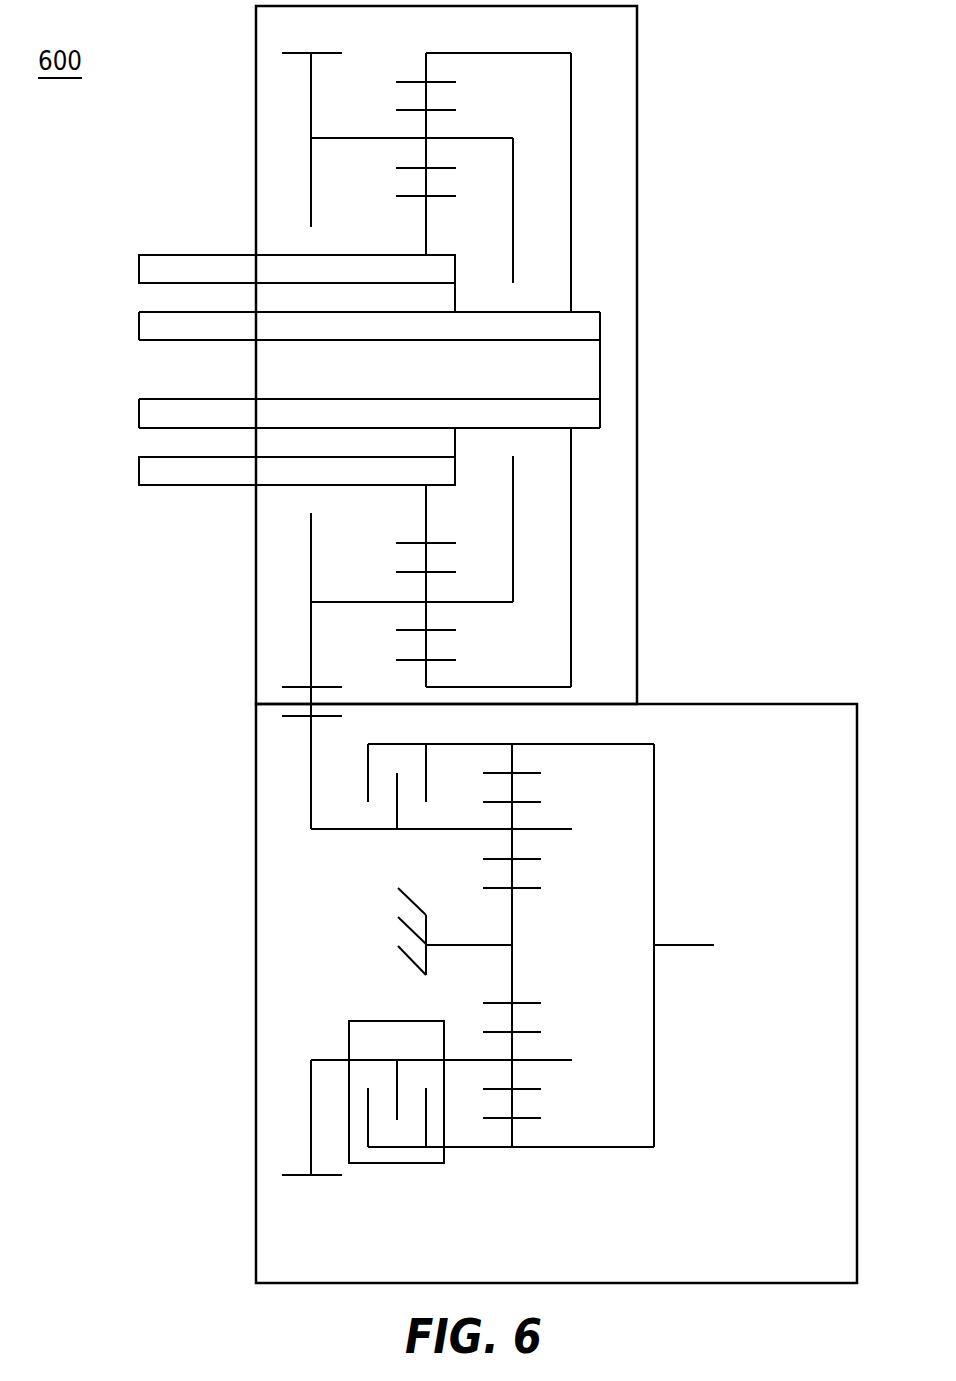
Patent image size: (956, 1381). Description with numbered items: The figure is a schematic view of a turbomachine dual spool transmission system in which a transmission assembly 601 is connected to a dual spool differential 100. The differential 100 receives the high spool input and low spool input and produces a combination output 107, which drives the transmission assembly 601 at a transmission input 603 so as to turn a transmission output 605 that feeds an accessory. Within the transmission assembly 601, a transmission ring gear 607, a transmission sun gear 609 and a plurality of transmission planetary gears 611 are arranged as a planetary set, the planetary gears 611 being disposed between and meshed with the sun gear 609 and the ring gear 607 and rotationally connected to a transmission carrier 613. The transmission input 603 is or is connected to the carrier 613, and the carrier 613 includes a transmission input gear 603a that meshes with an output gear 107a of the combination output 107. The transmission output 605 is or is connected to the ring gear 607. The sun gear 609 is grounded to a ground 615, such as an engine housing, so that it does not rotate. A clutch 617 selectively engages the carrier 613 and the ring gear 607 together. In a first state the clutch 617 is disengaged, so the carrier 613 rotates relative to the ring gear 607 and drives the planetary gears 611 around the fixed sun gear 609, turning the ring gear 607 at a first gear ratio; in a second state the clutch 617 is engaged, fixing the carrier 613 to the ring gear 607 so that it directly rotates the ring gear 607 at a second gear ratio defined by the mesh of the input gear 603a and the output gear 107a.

The dual spool differential 100 is at (256, 565).
The combination output 107 is at (311, 634).
The output gear 107a is at (298, 686).
The transmission input gear 603a is at (300, 716).
The transmission input 603 is at (463, 970).
The transmission carrier 613 is at (311, 819).
The ground 615 is at (386, 918).
The clutch 617 is at (350, 1086).
The transmission assembly 601 is at (256, 1200).
The transmission planetary gears 611 is at (512, 818).
The transmission sun gear 609 is at (512, 929).
The transmission ring gear 607 is at (565, 1147).
The transmission output 605 is at (775, 995).